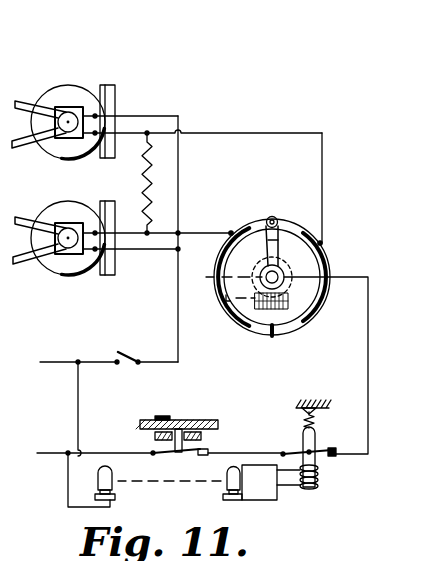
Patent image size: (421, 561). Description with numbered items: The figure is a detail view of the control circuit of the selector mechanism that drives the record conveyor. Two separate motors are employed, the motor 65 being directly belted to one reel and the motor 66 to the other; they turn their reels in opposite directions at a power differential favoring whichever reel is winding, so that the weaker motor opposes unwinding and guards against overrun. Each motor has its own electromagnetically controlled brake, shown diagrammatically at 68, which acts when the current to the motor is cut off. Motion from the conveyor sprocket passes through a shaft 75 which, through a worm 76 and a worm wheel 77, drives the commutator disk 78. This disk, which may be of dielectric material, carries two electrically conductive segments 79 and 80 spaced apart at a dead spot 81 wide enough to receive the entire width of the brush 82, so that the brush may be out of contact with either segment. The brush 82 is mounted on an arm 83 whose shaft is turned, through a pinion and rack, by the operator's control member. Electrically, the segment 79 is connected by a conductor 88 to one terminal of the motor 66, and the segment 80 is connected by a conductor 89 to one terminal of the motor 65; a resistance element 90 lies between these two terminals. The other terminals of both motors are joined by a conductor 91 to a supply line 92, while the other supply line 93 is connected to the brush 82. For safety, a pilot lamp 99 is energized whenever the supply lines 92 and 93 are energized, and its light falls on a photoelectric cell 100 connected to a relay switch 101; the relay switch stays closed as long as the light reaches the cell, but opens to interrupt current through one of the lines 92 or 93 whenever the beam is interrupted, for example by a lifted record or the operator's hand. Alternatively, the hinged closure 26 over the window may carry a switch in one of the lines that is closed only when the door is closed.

The closure 26 is at (205, 422).
The motor 65 is at (62, 95).
The motor 66 is at (62, 265).
The brake 68 is at (73, 133).
The shaft 75 is at (222, 312).
The worm 76 is at (263, 313).
The worm wheel 77 is at (224, 275).
The commutator disk 78 is at (308, 268).
The conductive segment 79 is at (248, 227).
The conductive segment 80 is at (293, 228).
The dead spot 81 is at (271, 216).
The brush 82 is at (277, 216).
The arm 83 is at (279, 246).
The conductor 88 is at (193, 228).
The conductor 89 is at (258, 132).
The resistance element 90 is at (143, 160).
The conductor 91 is at (178, 302).
The supply line 92 is at (68, 358).
The supply line 93 is at (368, 368).
The pilot lamp 99 is at (106, 479).
The photoelectric cell 100 is at (229, 472).
The relay switch 101 is at (324, 461).